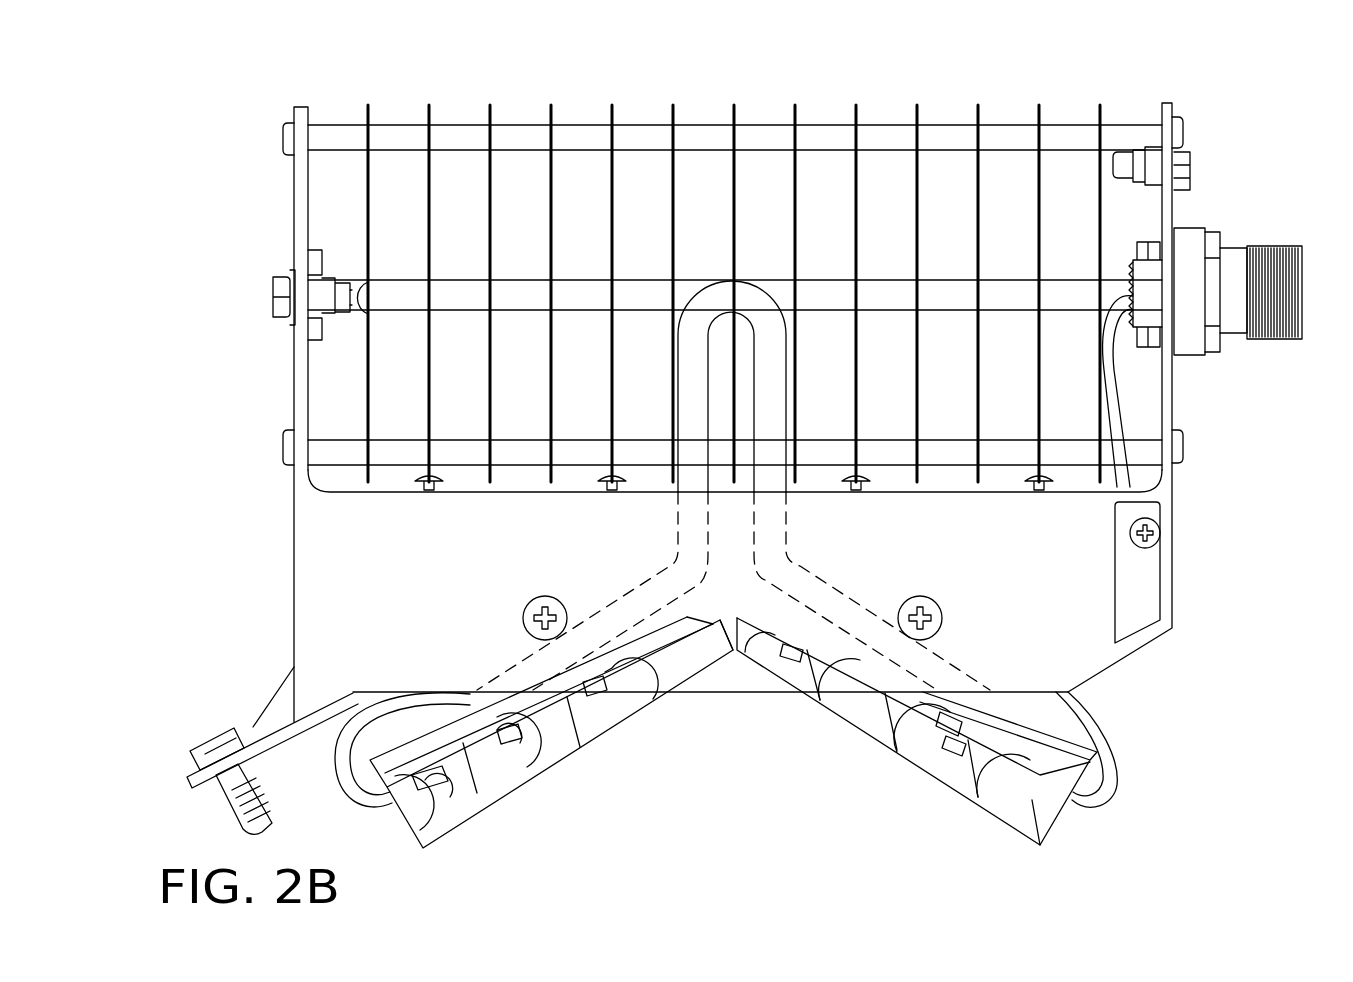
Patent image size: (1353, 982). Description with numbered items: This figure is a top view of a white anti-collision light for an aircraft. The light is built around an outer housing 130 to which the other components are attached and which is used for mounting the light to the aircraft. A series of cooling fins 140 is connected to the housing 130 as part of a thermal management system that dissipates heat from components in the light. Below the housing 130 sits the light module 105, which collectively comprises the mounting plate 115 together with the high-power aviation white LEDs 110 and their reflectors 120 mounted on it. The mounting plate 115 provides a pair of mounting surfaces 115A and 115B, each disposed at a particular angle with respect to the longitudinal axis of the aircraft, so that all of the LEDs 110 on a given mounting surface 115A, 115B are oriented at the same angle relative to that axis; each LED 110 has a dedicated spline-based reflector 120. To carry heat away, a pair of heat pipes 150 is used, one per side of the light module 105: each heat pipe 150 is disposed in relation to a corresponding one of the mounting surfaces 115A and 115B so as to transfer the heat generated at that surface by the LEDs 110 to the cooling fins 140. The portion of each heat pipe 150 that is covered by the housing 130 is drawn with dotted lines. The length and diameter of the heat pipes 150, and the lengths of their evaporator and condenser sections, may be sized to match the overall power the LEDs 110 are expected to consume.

The light module 105 is at (787, 745).
The high-power aviation white LEDs 110 is at (513, 737).
The mounting plate 115 is at (1097, 747).
The mounting surface 115A is at (989, 740).
The mounting surface 115B is at (458, 757).
The spline-based reflector 120 is at (612, 712).
The outer housing 130 is at (416, 597).
The cooling fins 140 is at (673, 105).
The heat pipes 150 is at (583, 290).